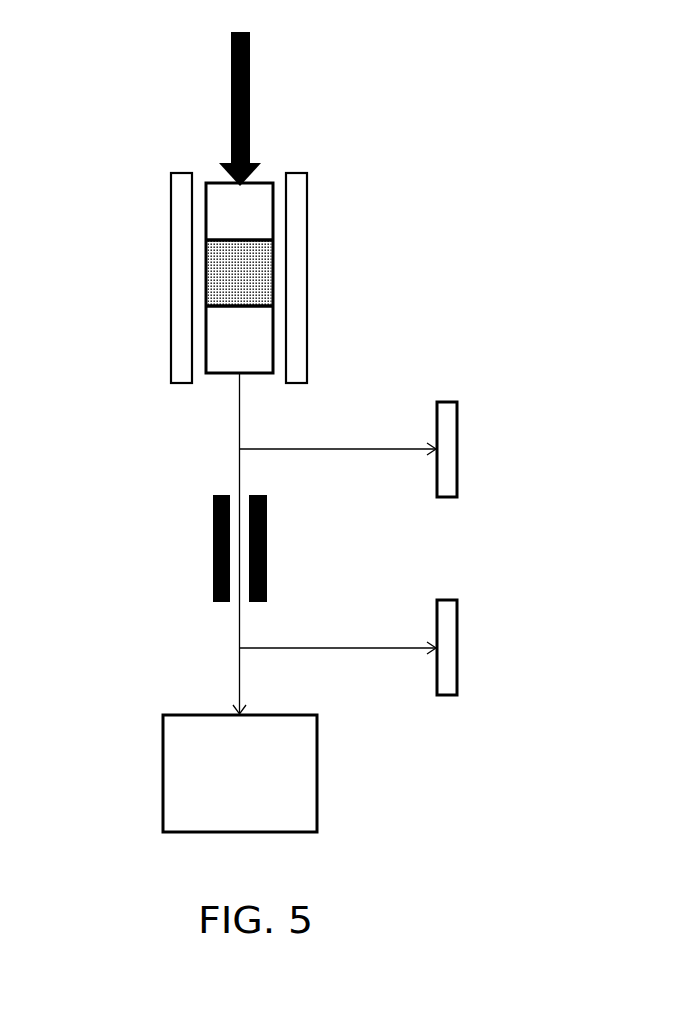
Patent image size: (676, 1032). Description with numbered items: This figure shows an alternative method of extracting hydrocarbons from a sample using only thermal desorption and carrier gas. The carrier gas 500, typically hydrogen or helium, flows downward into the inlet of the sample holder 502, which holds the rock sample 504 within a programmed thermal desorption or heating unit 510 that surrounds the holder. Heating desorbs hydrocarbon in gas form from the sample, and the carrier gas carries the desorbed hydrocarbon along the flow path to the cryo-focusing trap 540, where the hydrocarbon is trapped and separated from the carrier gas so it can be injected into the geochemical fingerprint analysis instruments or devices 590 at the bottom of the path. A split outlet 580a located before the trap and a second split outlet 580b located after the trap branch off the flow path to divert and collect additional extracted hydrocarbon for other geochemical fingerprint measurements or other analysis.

The carrier gas 500 is at (319, 100).
The sample holder 502 is at (257, 217).
The rock sample 504 is at (225, 264).
The thermal desorption unit 510 is at (307, 328).
The cryo-focusing trap 540 is at (359, 548).
The split outlet 580a is at (524, 449).
The split outlet 580b is at (530, 647).
The geochemical fingerprint analysis instruments 590 is at (287, 797).